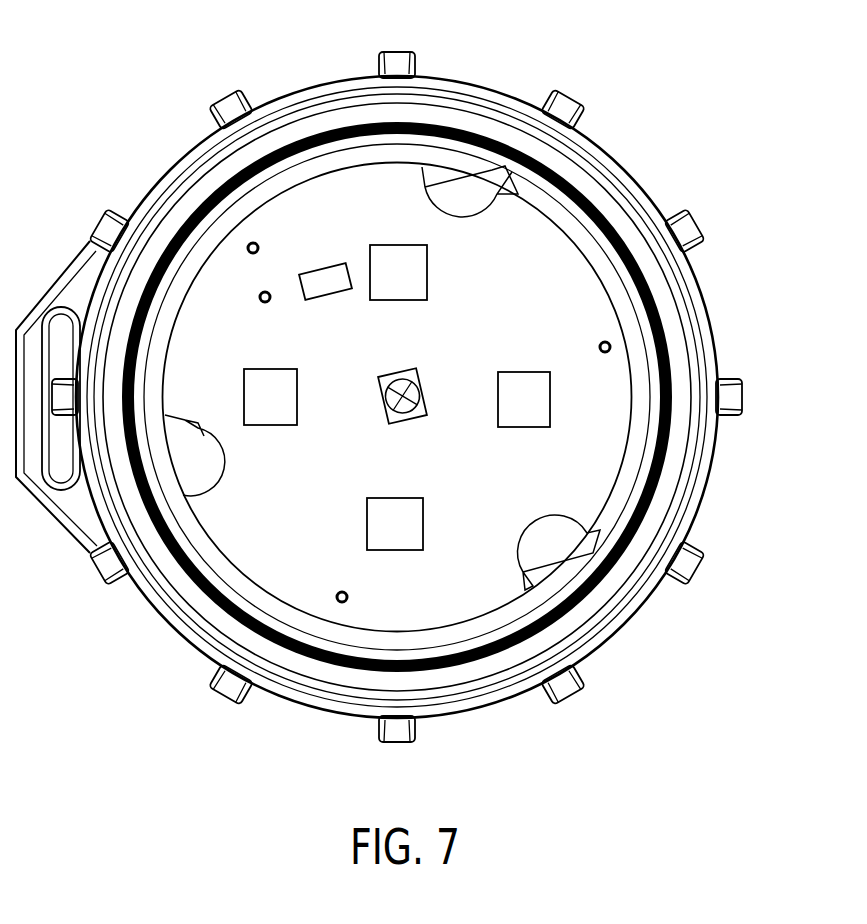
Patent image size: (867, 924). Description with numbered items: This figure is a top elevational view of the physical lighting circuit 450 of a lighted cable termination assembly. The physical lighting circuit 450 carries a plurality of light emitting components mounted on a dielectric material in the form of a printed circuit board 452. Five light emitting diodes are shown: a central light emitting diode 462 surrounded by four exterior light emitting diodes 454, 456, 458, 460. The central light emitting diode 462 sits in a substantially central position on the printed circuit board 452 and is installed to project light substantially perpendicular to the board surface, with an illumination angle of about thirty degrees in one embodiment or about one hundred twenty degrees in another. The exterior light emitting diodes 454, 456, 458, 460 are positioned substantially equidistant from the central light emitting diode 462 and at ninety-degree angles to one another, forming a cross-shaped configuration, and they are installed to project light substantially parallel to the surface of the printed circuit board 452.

The physical lighting circuit 450 is at (331, 156).
The printed circuit board 452 is at (287, 560).
The exterior light emitting diode 454 is at (398, 245).
The exterior light emitting diode 456 is at (527, 413).
The exterior light emitting diode 458 is at (408, 526).
The exterior light emitting diode 460 is at (269, 425).
The central light emitting diode 462 is at (413, 397).